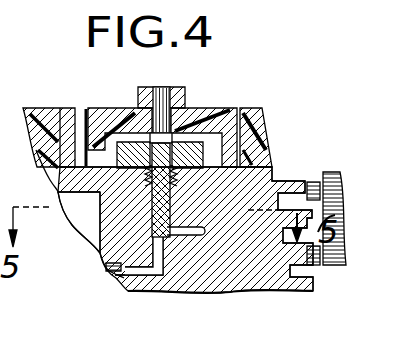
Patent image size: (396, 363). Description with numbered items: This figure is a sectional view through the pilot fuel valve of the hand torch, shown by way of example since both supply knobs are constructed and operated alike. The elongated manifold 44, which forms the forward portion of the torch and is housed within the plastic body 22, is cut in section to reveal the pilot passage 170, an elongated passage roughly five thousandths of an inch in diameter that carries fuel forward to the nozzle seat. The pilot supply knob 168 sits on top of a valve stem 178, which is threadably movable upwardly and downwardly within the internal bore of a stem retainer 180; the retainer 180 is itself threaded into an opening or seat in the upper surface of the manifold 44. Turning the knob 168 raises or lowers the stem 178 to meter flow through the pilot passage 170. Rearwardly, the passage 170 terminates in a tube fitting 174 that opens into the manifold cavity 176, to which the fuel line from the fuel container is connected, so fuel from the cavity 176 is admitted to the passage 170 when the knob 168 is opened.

The body 22 is at (43, 118).
The manifold 44 is at (265, 182).
The pilot supply knob 168 is at (172, 90).
The pilot passage 170 is at (185, 232).
The tube fitting 174 is at (112, 270).
The manifold cavity 176 is at (98, 232).
The valve stem 178 is at (206, 113).
The stem retainer 180 is at (126, 141).